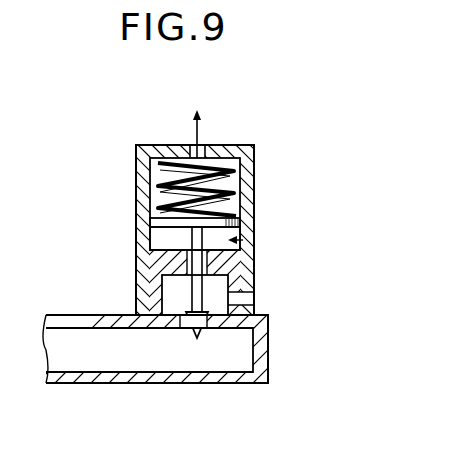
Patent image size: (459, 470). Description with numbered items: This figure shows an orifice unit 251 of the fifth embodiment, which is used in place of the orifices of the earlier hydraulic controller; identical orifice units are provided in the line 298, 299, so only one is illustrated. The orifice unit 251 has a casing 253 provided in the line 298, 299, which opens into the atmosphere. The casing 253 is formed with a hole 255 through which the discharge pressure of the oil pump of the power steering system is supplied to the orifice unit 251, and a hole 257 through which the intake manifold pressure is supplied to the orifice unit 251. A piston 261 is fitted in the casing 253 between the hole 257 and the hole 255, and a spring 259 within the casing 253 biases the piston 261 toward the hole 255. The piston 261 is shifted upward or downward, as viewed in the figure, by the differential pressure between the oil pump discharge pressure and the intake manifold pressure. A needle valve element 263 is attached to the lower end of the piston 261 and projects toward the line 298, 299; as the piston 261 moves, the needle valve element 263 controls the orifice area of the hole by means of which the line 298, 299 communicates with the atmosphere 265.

The orifice unit 251 is at (210, 242).
The casing 253 is at (150, 176).
The hole 255 is at (258, 244).
The hole 257 is at (200, 143).
The spring 259 is at (186, 160).
The piston 261 is at (240, 223).
The needle valve element 263 is at (184, 312).
The atmosphere 265 is at (244, 299).
The line 298 is at (201, 358).
The line 299 is at (188, 366).